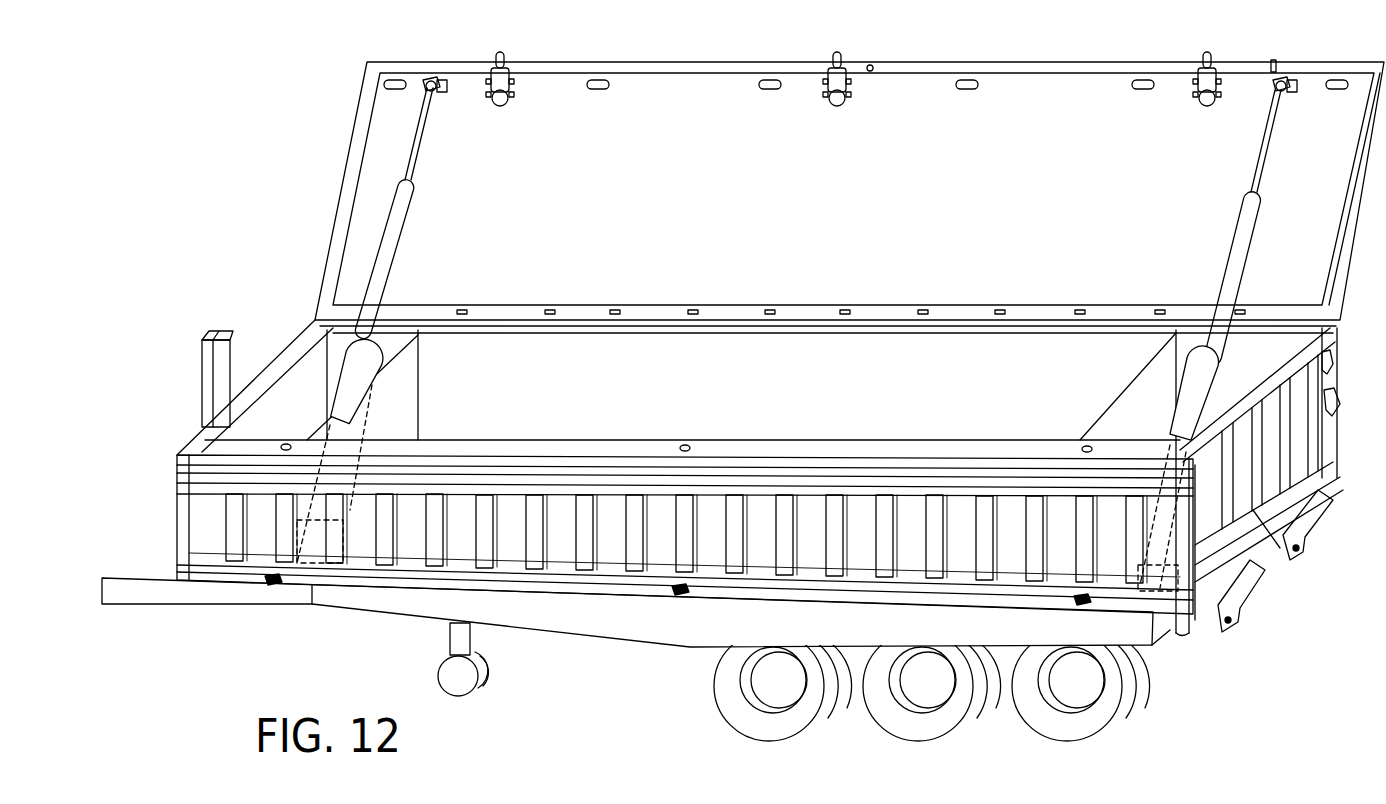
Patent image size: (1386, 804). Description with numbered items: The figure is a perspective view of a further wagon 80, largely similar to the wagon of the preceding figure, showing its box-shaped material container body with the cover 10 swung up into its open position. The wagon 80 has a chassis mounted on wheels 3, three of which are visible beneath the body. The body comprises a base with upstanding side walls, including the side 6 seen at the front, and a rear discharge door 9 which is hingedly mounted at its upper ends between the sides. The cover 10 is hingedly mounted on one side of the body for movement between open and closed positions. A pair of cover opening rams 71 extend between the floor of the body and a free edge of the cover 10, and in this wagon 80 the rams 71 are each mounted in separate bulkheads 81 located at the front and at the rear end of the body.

The cover 10 is at (897, 93).
The wagon 80 is at (1102, 60).
The cover opening rams 71 is at (412, 232).
The bulkheads 81 is at (392, 343).
The side 6 is at (615, 557).
The wheels 3 is at (737, 698).
The rear discharge door 9 is at (1257, 510).